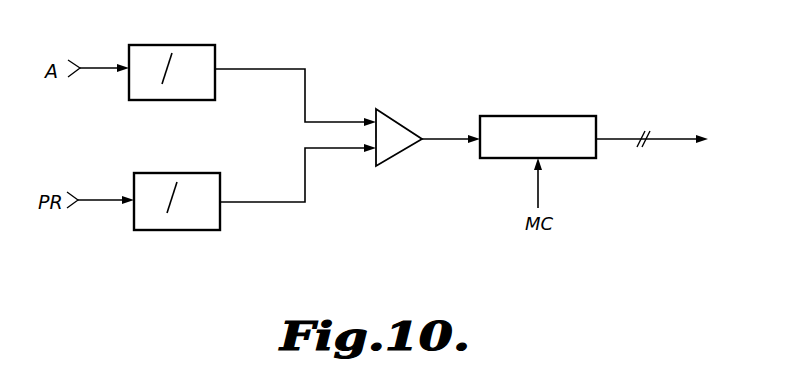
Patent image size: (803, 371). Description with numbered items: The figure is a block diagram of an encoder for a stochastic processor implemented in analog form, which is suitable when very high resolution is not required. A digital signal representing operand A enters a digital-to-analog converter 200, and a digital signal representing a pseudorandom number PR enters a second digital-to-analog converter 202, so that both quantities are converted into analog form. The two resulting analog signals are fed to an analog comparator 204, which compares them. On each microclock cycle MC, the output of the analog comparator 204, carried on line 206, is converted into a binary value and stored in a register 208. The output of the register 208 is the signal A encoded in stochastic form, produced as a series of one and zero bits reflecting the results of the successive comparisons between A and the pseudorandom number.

The digital-to-analog converter 200 is at (164, 44).
The digital-to-analog converter 202 is at (176, 172).
The analog comparator 204 is at (395, 118).
The line 206 is at (428, 144).
The register 208 is at (530, 115).